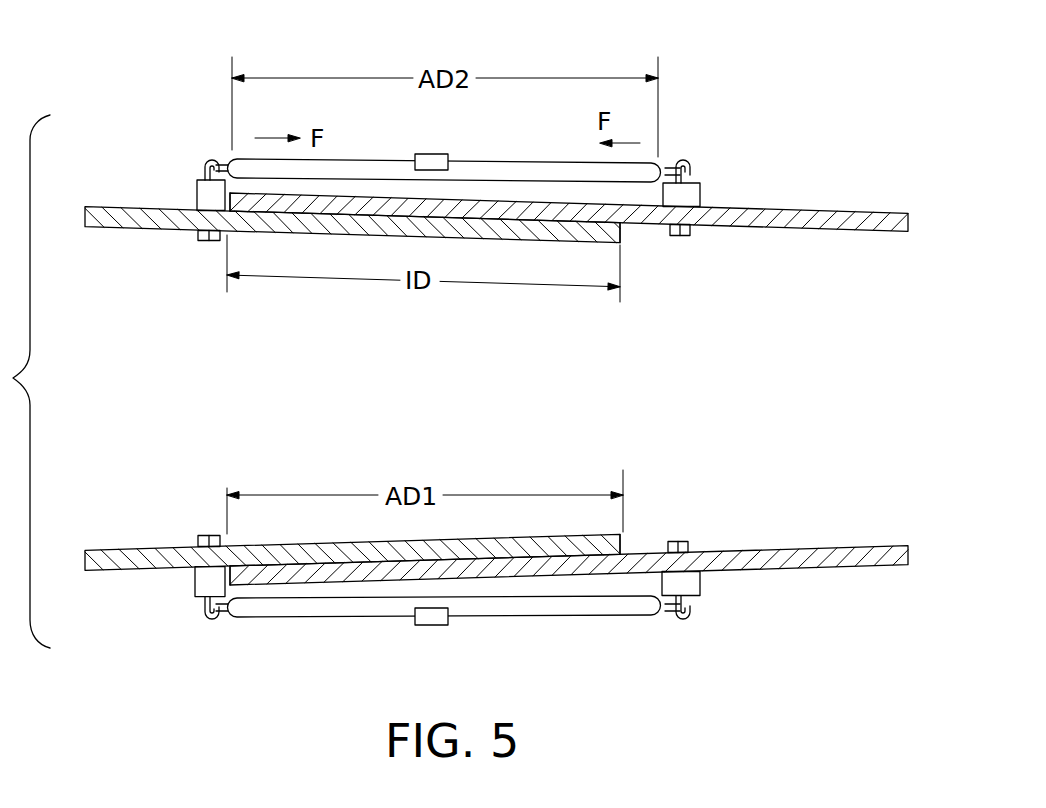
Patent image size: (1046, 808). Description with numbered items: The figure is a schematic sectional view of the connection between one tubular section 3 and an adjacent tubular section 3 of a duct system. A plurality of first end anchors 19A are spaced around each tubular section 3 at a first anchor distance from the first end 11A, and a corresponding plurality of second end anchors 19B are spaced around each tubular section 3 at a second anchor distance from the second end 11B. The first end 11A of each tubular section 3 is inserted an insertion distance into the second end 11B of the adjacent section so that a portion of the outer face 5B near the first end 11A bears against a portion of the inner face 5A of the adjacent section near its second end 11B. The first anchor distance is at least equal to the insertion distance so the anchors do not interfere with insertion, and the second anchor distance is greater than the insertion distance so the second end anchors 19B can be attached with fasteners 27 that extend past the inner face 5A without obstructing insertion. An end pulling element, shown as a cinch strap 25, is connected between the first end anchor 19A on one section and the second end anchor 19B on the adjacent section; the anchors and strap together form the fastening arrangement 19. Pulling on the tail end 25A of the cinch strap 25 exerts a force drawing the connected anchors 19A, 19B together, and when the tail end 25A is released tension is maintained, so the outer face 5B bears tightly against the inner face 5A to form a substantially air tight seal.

The tubular section 3 is at (485, 404).
The inner face 5A is at (145, 570).
The outer face 5B is at (650, 548).
The first end 11A is at (622, 240).
The second end 11B is at (230, 198).
The fastening device 19 is at (198, 190).
The first end anchor 19A is at (700, 583).
The second end anchor 19B is at (700, 195).
The cinch strap 25 is at (543, 163).
The tail end 25A is at (468, 128).
The fastener 27 is at (688, 542).